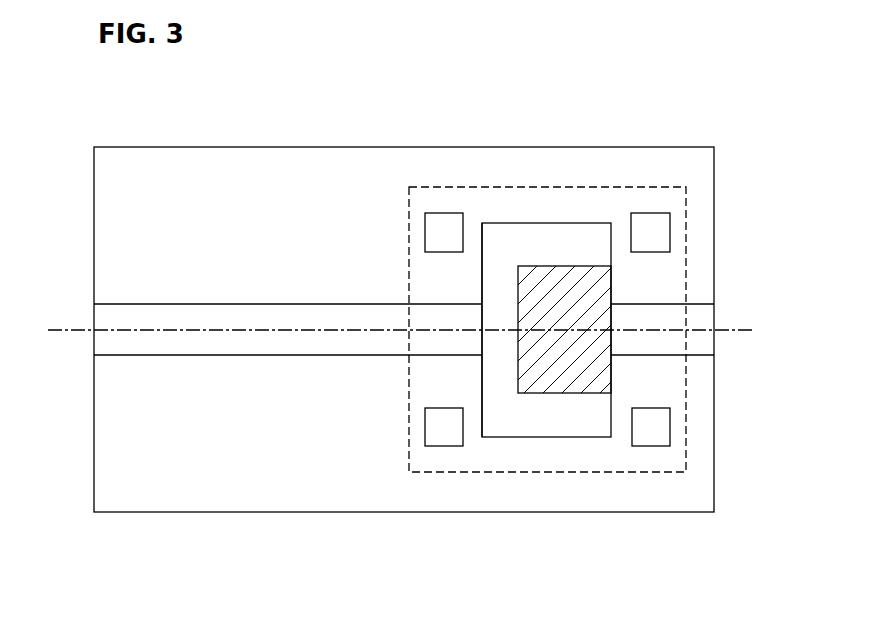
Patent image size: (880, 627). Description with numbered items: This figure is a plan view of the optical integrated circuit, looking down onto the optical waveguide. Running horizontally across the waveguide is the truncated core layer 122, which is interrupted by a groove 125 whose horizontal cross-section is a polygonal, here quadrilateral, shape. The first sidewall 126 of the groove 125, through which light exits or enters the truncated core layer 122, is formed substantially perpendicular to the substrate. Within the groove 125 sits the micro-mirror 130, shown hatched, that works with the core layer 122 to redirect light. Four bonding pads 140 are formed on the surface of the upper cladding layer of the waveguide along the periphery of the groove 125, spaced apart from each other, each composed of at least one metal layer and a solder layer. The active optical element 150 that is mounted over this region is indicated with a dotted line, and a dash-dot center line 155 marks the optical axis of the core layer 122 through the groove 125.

The core layer 122 is at (108, 341).
The groove 125 is at (503, 413).
The first sidewall 126 is at (483, 263).
The micro-mirror 130 is at (567, 380).
The bonding pads 140 is at (642, 225).
The active optical element 150 is at (552, 187).
The center line 155 is at (730, 330).